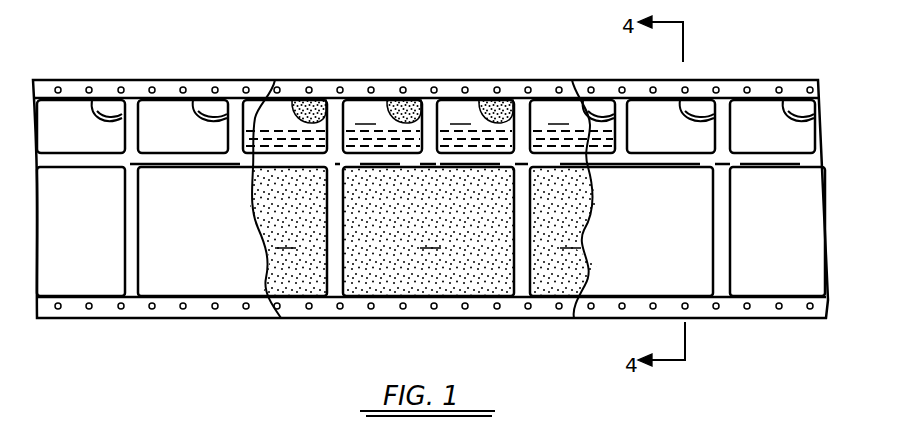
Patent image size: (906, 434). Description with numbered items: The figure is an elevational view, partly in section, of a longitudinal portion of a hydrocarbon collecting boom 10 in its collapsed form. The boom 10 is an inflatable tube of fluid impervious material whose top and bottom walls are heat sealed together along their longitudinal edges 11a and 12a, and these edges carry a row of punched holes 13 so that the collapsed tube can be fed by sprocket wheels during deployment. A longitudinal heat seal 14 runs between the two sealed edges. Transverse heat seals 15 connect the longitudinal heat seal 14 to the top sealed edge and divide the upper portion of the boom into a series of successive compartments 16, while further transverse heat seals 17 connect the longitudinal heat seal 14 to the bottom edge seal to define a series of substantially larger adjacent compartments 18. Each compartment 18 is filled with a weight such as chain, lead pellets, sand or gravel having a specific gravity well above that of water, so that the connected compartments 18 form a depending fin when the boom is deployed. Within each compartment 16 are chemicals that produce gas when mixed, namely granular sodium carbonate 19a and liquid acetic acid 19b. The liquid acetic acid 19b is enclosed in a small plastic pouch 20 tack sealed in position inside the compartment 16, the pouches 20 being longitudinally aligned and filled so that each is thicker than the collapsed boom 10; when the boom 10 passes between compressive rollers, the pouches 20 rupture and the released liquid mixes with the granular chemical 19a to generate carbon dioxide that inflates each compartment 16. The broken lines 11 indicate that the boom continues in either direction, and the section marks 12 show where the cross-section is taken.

The boom 10 is at (554, 24).
The tape segment 11 is at (268, 276).
The longitudinal edge 11a is at (274, 84).
The first edge margin 12 is at (164, 89).
The longitudinal edge 12a is at (452, 82).
The punched holes 13 is at (59, 87).
The longitudinal heat seal 14 is at (184, 160).
The transverse heat seals 15 is at (129, 110).
The compartments 16 is at (276, 114).
The transverse heat seals 17 is at (125, 245).
The compartments 18 is at (423, 231).
The granular sodium carbonate 19a is at (283, 146).
The liquid acetic acid 19b is at (318, 102).
The plastic pouch 20 is at (94, 114).